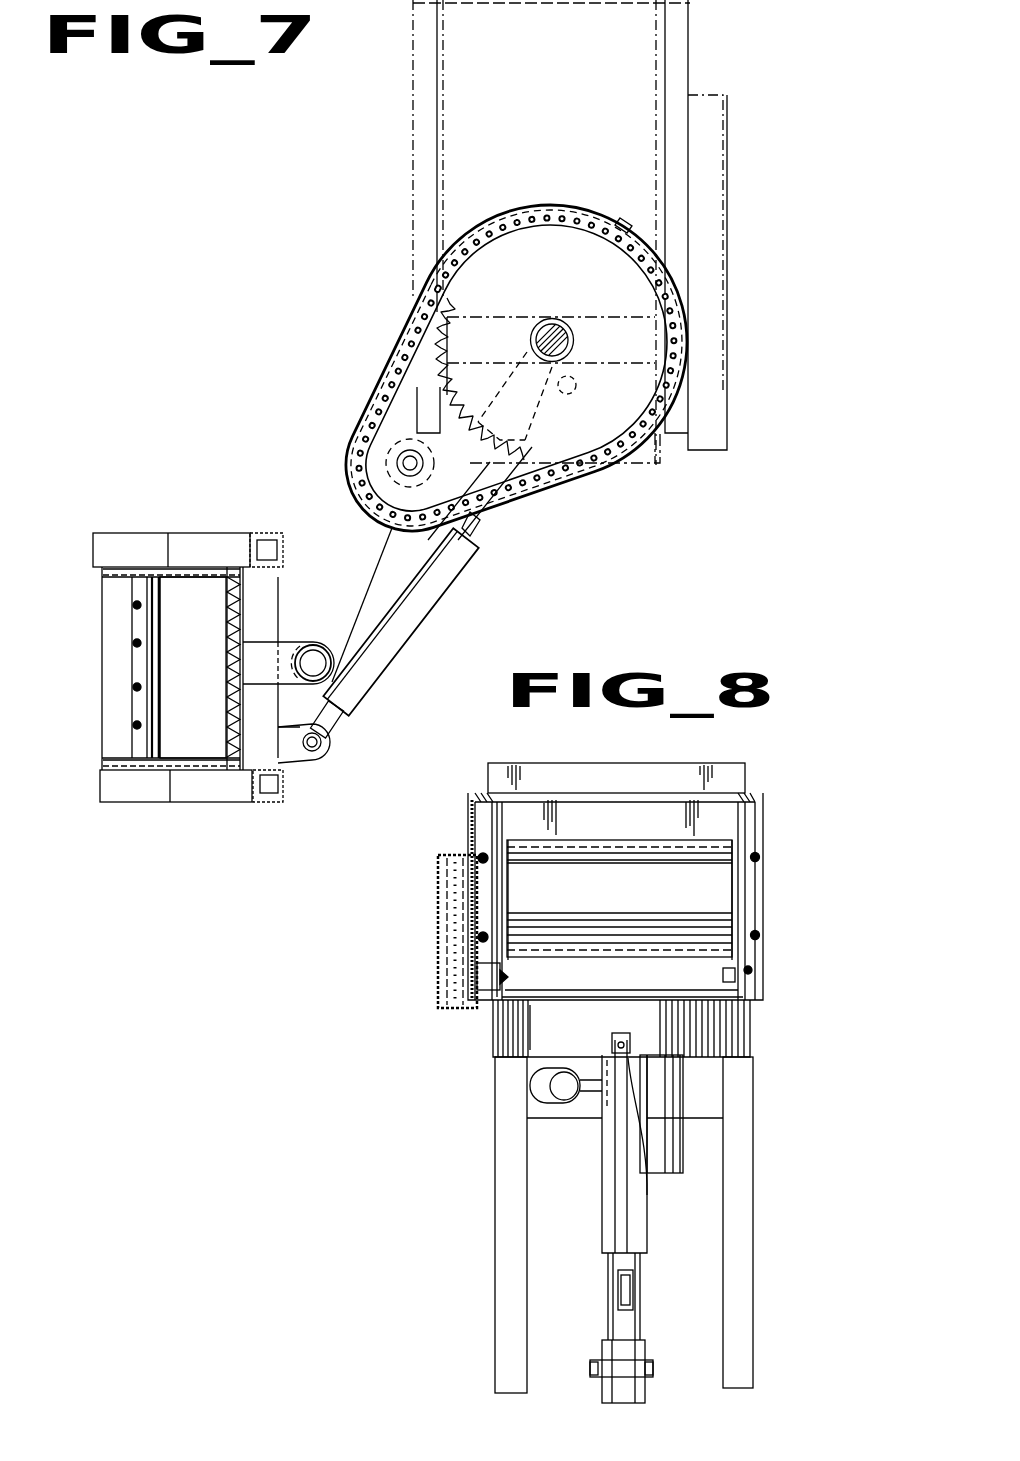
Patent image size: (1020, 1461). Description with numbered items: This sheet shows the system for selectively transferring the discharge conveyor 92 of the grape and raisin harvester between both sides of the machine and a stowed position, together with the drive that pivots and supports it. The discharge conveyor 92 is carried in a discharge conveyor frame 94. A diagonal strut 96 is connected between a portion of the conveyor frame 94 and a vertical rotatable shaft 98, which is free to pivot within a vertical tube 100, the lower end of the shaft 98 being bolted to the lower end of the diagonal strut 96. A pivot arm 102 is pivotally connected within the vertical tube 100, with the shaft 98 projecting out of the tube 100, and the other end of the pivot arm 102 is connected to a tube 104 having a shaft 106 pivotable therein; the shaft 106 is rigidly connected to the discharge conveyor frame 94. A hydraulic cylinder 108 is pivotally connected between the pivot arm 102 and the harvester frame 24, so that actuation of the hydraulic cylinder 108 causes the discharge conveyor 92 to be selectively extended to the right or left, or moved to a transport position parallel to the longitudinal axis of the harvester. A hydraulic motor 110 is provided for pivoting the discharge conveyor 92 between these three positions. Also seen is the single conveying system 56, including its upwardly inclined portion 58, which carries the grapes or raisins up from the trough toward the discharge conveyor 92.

In FIG. 7, the harvester frame 24 is at (262, 814).
In FIG. 8, the harvester frame 24 is at (755, 1327).
In FIG. 7, the single conveying system 56 is at (192, 524).
In FIG. 7, the upwardly inclined portion 58 is at (178, 686).
In FIG. 7, the discharge conveyor 92 is at (405, 194).
In FIG. 8, the discharge conveyor 92 is at (770, 767).
In FIG. 7, the discharge conveyor frame 94 is at (728, 197).
In FIG. 8, the discharge conveyor frame 94 is at (766, 798).
In FIG. 8, the diagonal strut 96 is at (625, 1322).
In FIG. 7, the vertical rotatable shaft 98 is at (312, 646).
In FIG. 8, the vertical rotatable shaft 98 is at (608, 1265).
In FIG. 7, the vertical tube 100 is at (378, 692).
In FIG. 8, the vertical tube 100 is at (605, 1185).
In FIG. 7, the pivot arm 102 is at (372, 556).
In FIG. 7, the tube 104 is at (580, 319).
In FIG. 8, the tube 104 is at (683, 1100).
In FIG. 7, the shaft 106 is at (532, 336).
In FIG. 7, the hydraulic cylinder 108 is at (410, 642).
In FIG. 8, the hydraulic cylinder 108 is at (530, 1086).
In FIG. 7, the hydraulic motor 110 is at (385, 443).
In FIG. 8, the hydraulic motor 110 is at (683, 1140).